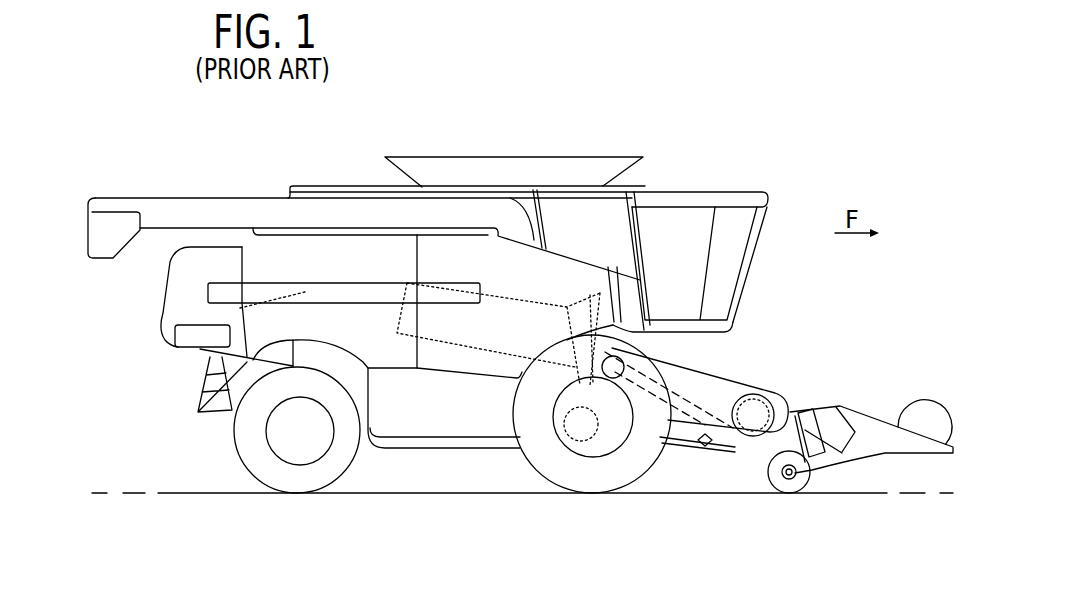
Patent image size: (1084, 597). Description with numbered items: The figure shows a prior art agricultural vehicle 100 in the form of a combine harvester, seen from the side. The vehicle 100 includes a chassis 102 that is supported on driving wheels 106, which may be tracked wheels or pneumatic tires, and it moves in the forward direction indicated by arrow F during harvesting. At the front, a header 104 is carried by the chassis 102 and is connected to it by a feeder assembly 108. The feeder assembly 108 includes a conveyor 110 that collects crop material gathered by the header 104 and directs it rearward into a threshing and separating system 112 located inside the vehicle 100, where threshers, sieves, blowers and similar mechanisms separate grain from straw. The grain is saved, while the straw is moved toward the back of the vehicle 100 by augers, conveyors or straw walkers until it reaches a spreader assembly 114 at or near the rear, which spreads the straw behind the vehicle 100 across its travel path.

The agricultural vehicle 100 is at (756, 113).
The chassis 102 is at (430, 430).
The header 104 is at (856, 372).
The driving wheels 106 is at (305, 478).
The feeder assembly 108 is at (733, 382).
The conveyor 110 is at (733, 440).
The threshing and separating system 112 is at (547, 303).
The spreader assembly 114 is at (173, 341).